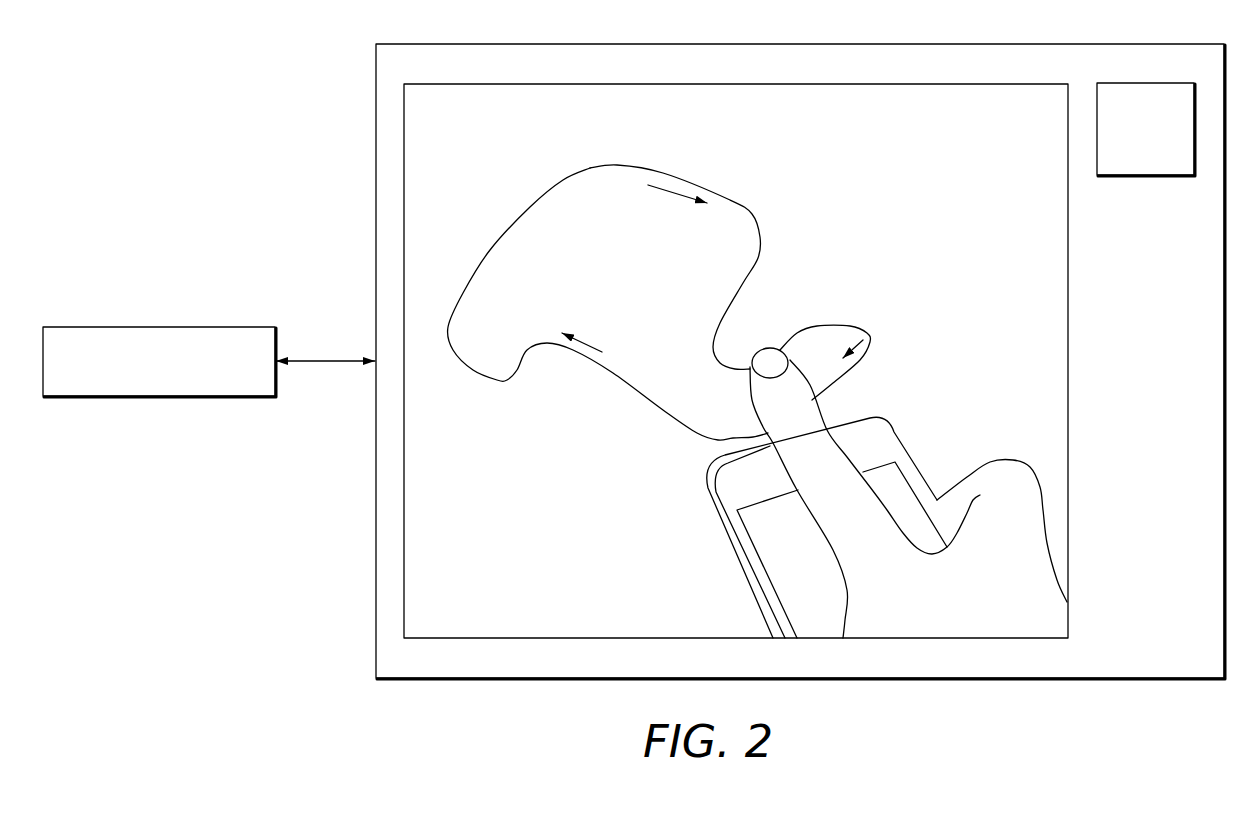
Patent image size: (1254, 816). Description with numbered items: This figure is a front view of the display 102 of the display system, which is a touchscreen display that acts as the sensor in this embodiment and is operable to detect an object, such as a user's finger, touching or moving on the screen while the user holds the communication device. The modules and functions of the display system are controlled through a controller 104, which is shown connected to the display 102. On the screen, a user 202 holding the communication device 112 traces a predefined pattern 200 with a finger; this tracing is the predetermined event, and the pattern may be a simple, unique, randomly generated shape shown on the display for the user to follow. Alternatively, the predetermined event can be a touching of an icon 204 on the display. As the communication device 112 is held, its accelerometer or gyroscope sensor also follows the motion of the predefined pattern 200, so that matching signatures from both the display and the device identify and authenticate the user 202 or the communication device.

The display 102 is at (392, 44).
The controller 104 is at (257, 327).
The communication device 112 is at (882, 416).
The predefined pattern 200 is at (758, 217).
The user 202 is at (1015, 460).
The icon 204 is at (1125, 83).